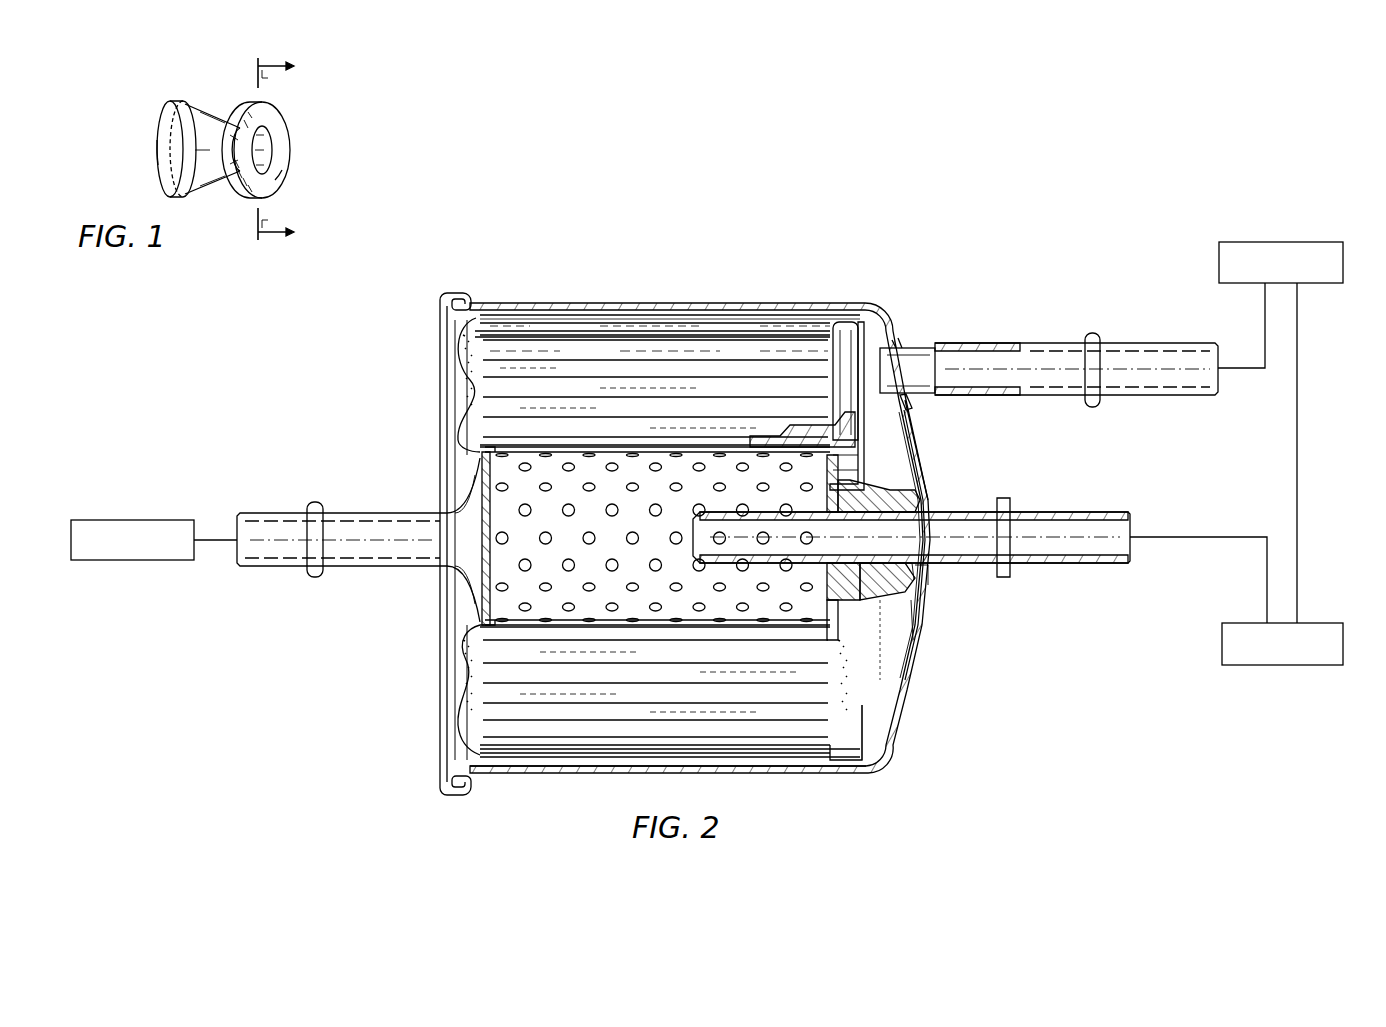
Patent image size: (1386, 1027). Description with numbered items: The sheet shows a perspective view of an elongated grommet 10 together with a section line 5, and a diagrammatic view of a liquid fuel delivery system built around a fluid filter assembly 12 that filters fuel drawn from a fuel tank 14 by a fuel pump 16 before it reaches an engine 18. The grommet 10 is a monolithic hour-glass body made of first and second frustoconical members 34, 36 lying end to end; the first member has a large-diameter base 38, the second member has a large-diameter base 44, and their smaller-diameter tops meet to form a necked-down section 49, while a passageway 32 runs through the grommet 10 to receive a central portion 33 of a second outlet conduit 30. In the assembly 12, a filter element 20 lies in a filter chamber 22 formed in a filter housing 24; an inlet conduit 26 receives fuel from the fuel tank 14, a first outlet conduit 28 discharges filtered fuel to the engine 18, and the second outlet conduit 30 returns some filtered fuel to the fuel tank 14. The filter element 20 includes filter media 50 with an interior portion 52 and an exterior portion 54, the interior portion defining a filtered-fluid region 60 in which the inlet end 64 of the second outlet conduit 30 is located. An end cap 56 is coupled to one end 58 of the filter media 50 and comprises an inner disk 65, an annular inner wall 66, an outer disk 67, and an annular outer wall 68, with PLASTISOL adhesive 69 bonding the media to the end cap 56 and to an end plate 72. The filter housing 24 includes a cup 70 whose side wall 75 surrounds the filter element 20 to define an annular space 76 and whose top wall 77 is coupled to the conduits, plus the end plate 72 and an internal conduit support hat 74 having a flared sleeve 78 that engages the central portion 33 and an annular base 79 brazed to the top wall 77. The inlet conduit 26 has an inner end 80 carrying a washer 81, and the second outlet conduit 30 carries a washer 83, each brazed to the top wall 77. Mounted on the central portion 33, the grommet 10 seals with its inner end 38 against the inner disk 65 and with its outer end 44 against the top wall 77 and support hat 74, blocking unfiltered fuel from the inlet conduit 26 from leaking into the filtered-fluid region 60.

In FIG. 1, the elongated grommet 10 is at (212, 122).
In FIG. 2, the elongated grommet 10 is at (874, 556).
In FIG. 2, the fluid filter assembly 12 is at (707, 512).
In FIG. 2, the fuel tank 14 is at (1283, 666).
In FIG. 2, the fuel pump 16 is at (1290, 242).
In FIG. 2, the engine 18 is at (128, 520).
In FIG. 2, the filter element 20 is at (662, 332).
In FIG. 2, the filter chamber 22 is at (894, 700).
In FIG. 2, the filter housing 24 is at (550, 778).
In FIG. 2, the inlet conduit 26 is at (1046, 343).
In FIG. 2, the first outlet conduit 28 is at (352, 514).
In FIG. 2, the second outlet conduit 30 is at (1066, 512).
In FIG. 1, the passageway 32 is at (272, 150).
In FIG. 2, the central portion 33 is at (872, 563).
In FIG. 1, the first frustoconical member 34 is at (177, 100).
In FIG. 2, the first frustoconical member 34 is at (856, 601).
In FIG. 1, the second frustoconical member 36 is at (290, 120).
In FIG. 2, the second frustoconical member 36 is at (918, 624).
In FIG. 1, the large-diameter base 38 is at (157, 162).
In FIG. 2, the large-diameter base 38 is at (826, 490).
In FIG. 1, the large-diameter base 44 is at (275, 185).
In FIG. 2, the large-diameter base 44 is at (921, 508).
In FIG. 1, the necked-down section 49 is at (219, 99).
In FIG. 1, the section line 5 is at (272, 147).
In FIG. 2, the filter media 50 is at (630, 356).
In FIG. 2, the interior portion 52 is at (488, 454).
In FIG. 2, the exterior portion 54 is at (535, 334).
In FIG. 2, the end cap 56 is at (849, 322).
In FIG. 2, the end 58 is at (805, 358).
In FIG. 2, the filtered-fluid region 60 is at (488, 604).
In FIG. 2, the inlet end 64 is at (698, 524).
In FIG. 2, the inner disk 65 is at (815, 563).
In FIG. 2, the annular inner wall 66 is at (862, 468).
In FIG. 2, the outer disk 67 is at (880, 772).
In FIG. 2, the annular outer wall 68 is at (850, 762).
In FIG. 2, the PLASTISOL adhesive 69 is at (472, 720).
In FIG. 2, the cup 70 is at (489, 308).
In FIG. 2, the end plate 72 is at (455, 668).
In FIG. 2, the internal conduit support hat 74 is at (900, 686).
In FIG. 2, the side wall 75 is at (580, 312).
In FIG. 2, the annular space 76 is at (705, 328).
In FIG. 2, the top wall 77 is at (910, 650).
In FIG. 2, the flared sleeve 78 is at (906, 563).
In FIG. 2, the annular base 79 is at (912, 415).
In FIG. 2, the inner end 80 is at (920, 392).
In FIG. 2, the washer 81 is at (905, 345).
In FIG. 2, the washer 83 is at (930, 584).